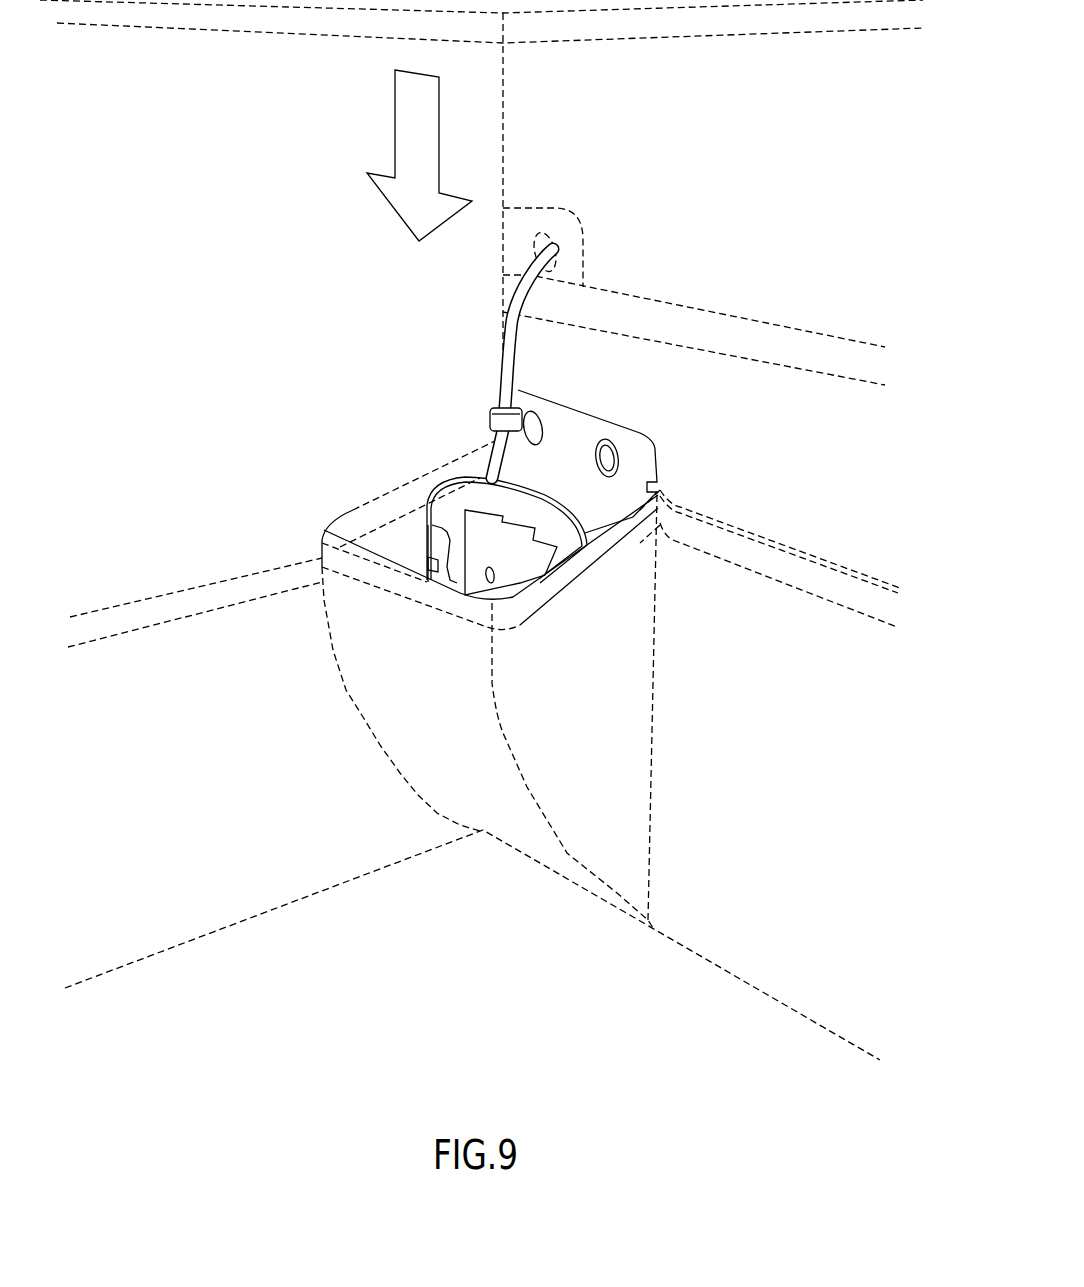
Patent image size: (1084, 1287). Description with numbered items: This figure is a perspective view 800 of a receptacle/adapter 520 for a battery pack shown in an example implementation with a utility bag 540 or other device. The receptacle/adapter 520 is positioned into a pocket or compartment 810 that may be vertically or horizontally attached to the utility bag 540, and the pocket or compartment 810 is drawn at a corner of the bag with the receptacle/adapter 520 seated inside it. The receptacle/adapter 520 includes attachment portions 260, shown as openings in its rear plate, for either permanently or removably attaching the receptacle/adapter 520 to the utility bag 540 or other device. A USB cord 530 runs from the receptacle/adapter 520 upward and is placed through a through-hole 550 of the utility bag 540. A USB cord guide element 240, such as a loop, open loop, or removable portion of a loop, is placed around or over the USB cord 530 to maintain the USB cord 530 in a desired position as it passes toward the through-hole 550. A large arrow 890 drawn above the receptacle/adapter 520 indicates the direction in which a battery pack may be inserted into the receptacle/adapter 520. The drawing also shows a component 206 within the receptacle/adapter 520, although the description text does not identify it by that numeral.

The perspective view 800 is at (747, 143).
The pocket or compartment 810 is at (443, 693).
The arrow 890 is at (395, 125).
The through-hole 550 is at (545, 243).
The USB cord 530 is at (540, 280).
The USB cord guide element 240 is at (497, 420).
The receptacle/adapter 520 is at (443, 492).
The attachment portions 260 is at (612, 460).
The mounting plate 206 is at (433, 552).
The utility bag 540 is at (408, 955).